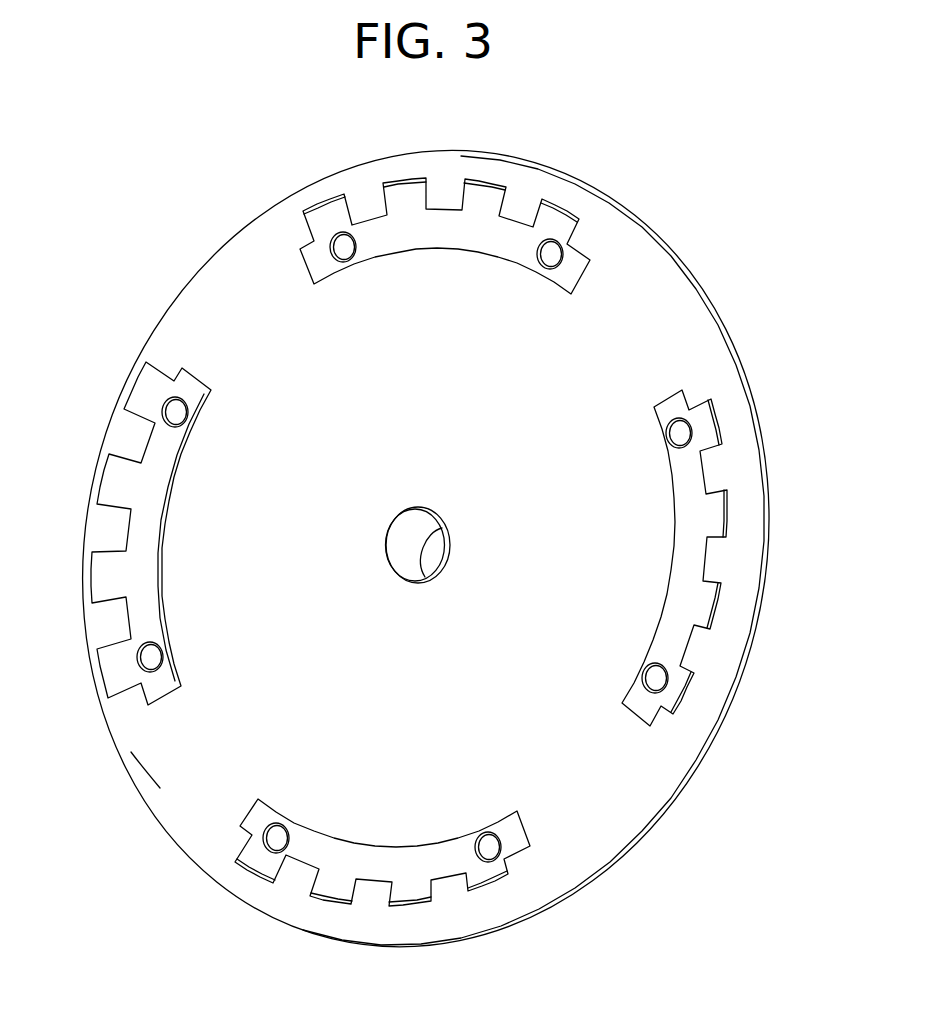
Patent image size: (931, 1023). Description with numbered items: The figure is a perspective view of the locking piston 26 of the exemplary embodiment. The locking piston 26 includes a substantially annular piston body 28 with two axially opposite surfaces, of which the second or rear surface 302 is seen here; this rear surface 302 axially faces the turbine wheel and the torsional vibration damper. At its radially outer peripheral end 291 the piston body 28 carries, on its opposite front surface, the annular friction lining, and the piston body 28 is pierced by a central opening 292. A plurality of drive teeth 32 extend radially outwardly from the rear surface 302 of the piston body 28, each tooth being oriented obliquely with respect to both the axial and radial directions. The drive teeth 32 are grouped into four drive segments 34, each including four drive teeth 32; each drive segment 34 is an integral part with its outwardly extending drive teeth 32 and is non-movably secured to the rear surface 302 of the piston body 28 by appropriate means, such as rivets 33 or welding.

The locking piston 26 is at (503, 155).
The piston body 28 is at (677, 292).
The radially outer peripheral end 291 is at (157, 780).
The central hole 292 is at (449, 541).
The second (or rear) surface 302 is at (636, 808).
The drive teeth 32 is at (326, 216).
The rivets 33 is at (343, 249).
The drive segments 34 is at (427, 550).